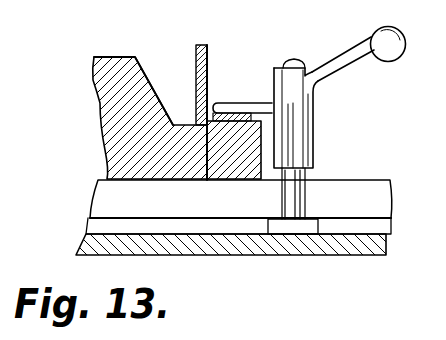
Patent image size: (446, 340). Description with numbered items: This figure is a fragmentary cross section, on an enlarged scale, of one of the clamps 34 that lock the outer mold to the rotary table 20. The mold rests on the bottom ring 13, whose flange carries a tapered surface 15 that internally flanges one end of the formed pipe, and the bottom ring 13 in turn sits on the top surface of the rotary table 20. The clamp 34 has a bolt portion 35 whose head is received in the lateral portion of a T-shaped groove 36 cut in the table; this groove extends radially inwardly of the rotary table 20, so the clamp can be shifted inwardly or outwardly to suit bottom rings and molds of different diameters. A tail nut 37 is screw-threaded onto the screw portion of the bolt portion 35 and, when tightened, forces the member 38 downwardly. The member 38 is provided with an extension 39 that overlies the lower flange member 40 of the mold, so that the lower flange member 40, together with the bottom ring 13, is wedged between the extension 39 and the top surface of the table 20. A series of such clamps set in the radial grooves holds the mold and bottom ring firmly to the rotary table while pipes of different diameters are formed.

The bottom ring 13 is at (137, 97).
The tapered surface 15 is at (135, 57).
The rotary table 20 is at (368, 200).
The clamp 34 is at (314, 121).
The bolt portion 35 is at (296, 185).
The T-shaped groove 36 is at (340, 228).
The tail nut 37 is at (327, 67).
The member 38 is at (293, 117).
The extension 39 is at (233, 103).
The lower flange member 40 is at (207, 180).